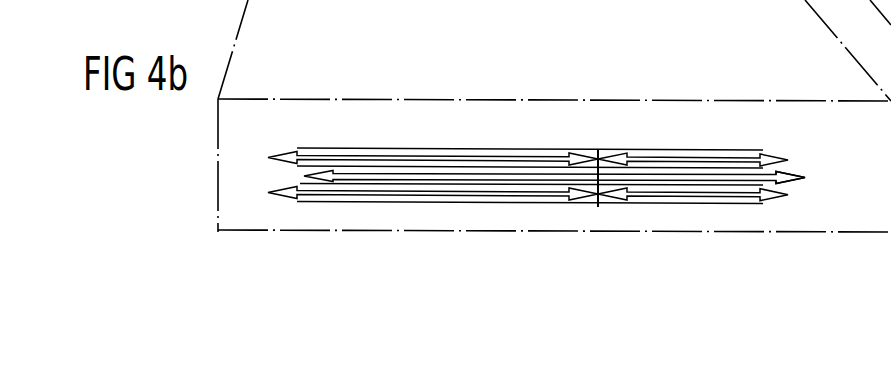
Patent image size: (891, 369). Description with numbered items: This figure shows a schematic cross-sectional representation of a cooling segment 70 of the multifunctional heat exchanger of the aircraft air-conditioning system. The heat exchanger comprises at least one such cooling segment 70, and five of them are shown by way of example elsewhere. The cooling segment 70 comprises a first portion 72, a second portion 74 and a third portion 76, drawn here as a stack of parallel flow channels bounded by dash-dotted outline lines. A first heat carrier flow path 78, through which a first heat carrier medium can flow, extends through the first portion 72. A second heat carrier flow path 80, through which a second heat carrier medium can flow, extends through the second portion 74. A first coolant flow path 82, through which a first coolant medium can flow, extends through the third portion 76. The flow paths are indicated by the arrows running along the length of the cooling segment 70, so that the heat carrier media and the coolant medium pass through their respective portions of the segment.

The cooling segment 70 is at (808, 141).
The first portion 72 is at (356, 150).
The second portion 74 is at (651, 150).
The third portion 76 is at (410, 171).
The first heat carrier flow path 78 is at (283, 152).
The second heat carrier flow path 80 is at (698, 152).
The first coolant flow path 82 is at (795, 183).